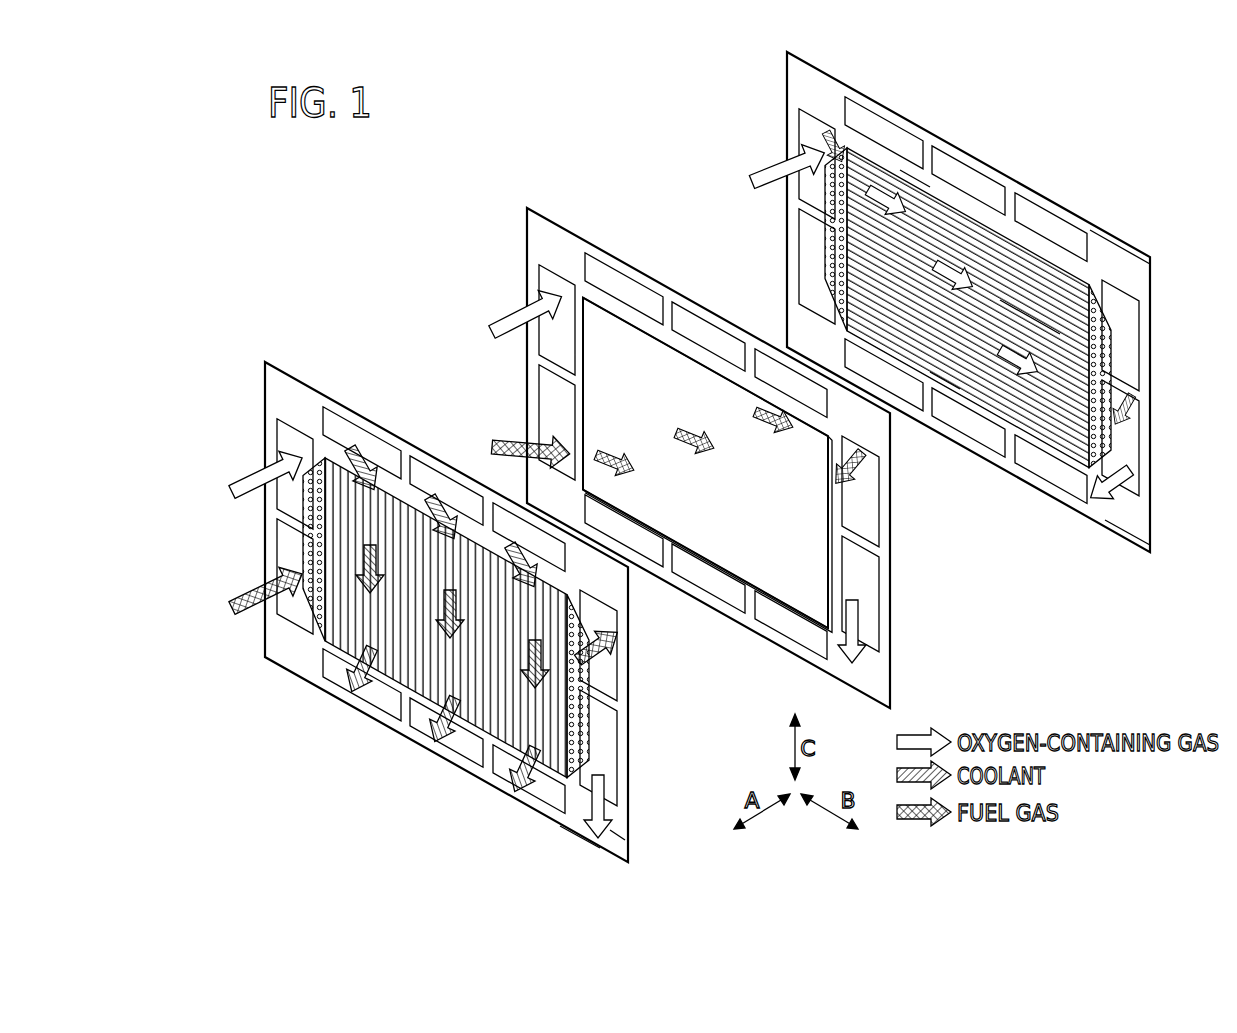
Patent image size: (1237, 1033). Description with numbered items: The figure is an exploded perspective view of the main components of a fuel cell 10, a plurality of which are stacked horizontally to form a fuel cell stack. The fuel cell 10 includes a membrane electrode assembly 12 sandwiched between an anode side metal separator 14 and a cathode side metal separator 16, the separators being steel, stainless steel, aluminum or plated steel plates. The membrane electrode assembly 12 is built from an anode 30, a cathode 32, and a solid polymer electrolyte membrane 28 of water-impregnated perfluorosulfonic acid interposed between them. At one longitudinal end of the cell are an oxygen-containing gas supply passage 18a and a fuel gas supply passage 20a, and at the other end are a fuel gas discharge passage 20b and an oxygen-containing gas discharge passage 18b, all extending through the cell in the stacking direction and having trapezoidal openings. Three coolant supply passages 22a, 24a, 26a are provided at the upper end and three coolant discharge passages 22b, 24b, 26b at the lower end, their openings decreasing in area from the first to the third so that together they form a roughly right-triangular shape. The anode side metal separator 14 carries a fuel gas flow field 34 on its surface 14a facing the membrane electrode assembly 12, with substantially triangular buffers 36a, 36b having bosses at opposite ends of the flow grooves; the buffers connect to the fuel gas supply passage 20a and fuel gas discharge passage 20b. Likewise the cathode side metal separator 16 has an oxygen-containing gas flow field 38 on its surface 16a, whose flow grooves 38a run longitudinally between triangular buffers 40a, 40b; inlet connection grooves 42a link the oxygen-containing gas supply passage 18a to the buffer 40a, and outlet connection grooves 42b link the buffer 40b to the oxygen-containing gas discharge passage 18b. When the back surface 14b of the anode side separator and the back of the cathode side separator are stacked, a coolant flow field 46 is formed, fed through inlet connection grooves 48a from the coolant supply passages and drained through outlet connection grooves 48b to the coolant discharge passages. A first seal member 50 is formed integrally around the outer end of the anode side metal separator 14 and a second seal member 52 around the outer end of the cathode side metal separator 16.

The fuel cell 10 is at (274, 212).
The membrane electrode assembly 12 is at (524, 208).
The anode side metal separator 14 is at (262, 362).
The surface of anode side metal separator 14a is at (622, 842).
The surface of anode side metal separator 14b is at (628, 826).
The cathode side metal separator 16 is at (784, 52).
The surface of cathode side metal separator 16a is at (1125, 527).
The oxygen-containing gas supply passage 18a is at (290, 432).
The oxygen-containing gas discharge passage 18b is at (612, 745).
The fuel gas supply passage 20a is at (292, 556).
The fuel gas discharge passage 20b is at (612, 665).
The coolant supply passage 22a is at (345, 432).
The coolant discharge passage 22b is at (338, 676).
The coolant supply passage 24a is at (422, 478).
The coolant discharge passage 24b is at (420, 722).
The coolant supply passage 26a is at (515, 535).
The coolant discharge passage 26b is at (498, 765).
The solid polymer electrolyte membrane 28 is at (798, 645).
The anode 30 is at (700, 535).
The cathode 32 is at (737, 555).
The fuel gas flow field 34 is at (290, 462).
The buffer 36a is at (302, 522).
The buffer 36b is at (600, 697).
The oxygen-containing gas flow field 38 is at (940, 237).
The flow grooves 38a is at (1005, 395).
The buffer 40a is at (826, 232).
The buffer 40b is at (1108, 358).
The inlet connection grooves 42a is at (828, 140).
The outlet connection grooves 42b is at (1125, 426).
The coolant flow field 46 is at (345, 628).
The inlet connection grooves 48a is at (888, 215).
The outlet connection grooves 48b is at (945, 400).
The first seal member 50 is at (590, 850).
The second seal member 52 is at (1108, 236).